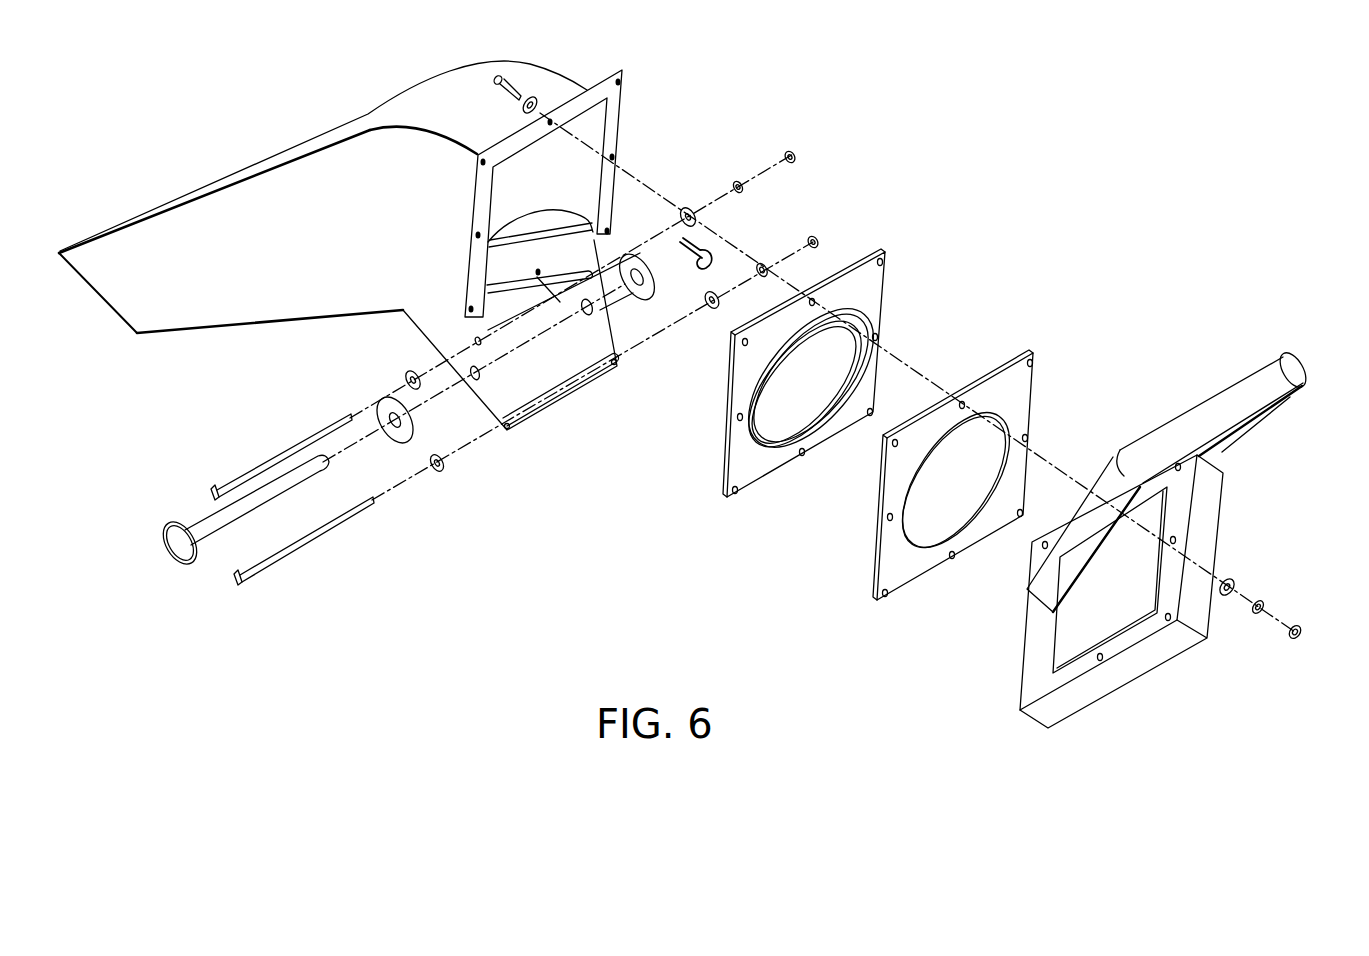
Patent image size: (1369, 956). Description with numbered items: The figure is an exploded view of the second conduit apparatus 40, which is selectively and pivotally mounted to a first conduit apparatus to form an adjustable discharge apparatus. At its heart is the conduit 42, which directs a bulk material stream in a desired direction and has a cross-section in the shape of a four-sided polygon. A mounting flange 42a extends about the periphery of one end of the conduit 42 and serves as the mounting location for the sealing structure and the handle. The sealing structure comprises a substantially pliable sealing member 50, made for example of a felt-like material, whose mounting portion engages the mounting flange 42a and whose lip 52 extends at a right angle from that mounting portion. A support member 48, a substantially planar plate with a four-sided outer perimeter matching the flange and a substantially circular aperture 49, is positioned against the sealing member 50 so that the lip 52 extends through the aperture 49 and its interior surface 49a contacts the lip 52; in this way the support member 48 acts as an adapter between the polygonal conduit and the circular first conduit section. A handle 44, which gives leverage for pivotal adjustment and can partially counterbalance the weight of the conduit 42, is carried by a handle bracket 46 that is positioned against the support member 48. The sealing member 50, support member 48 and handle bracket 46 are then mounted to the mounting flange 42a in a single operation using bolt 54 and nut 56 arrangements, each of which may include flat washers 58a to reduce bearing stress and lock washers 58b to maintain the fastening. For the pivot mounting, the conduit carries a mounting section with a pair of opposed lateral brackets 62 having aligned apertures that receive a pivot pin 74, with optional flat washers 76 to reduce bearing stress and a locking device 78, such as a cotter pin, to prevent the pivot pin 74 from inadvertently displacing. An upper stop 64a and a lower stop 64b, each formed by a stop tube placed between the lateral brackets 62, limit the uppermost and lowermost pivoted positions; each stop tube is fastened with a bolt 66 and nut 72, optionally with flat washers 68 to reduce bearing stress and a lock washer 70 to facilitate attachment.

The second conduit apparatus 40 is at (908, 128).
The conduit 42 is at (277, 153).
The mounting flange 42a is at (475, 204).
The handle 44 is at (1207, 400).
The handle bracket 46 is at (1073, 673).
The support member 48 is at (910, 582).
The aperture 49 is at (964, 510).
The interior surface of the aperture 49a is at (1003, 460).
The sealing member 50 is at (758, 478).
The lip 52 is at (878, 328).
The bolt 54 is at (497, 76).
The nut 56 is at (1302, 631).
The flat washer 58a is at (535, 97).
The lock washer 58b is at (1264, 602).
The lateral bracket 62 is at (475, 386).
The upper stop 64a is at (545, 296).
The lower stop 64b is at (556, 396).
The bolt 66 is at (276, 456).
The flat washer 68 is at (406, 373).
The lock washer 70 is at (737, 178).
The nut 72 is at (790, 148).
The pivot pin 74 is at (217, 537).
The flat washer 76 is at (385, 405).
The locking device 78 is at (712, 252).